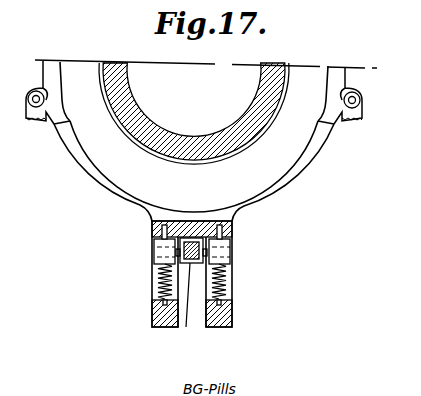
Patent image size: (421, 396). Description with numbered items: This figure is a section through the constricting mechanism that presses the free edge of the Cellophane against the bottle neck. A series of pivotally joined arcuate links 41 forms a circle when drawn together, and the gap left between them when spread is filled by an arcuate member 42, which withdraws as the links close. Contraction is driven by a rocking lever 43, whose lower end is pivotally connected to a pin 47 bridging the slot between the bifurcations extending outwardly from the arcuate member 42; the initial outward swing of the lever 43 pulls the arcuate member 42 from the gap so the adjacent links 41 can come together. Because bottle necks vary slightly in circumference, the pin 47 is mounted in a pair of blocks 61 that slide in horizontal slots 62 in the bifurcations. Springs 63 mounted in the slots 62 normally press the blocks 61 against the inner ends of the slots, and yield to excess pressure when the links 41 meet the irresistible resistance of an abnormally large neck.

The arcuate links 41 is at (43, 74).
The arcuate member 42 is at (113, 190).
The rocking lever 43 is at (238, 212).
The pin 47 is at (186, 327).
The blocks 61 is at (153, 247).
The horizontal slots 62 is at (212, 269).
The springs 63 is at (156, 287).